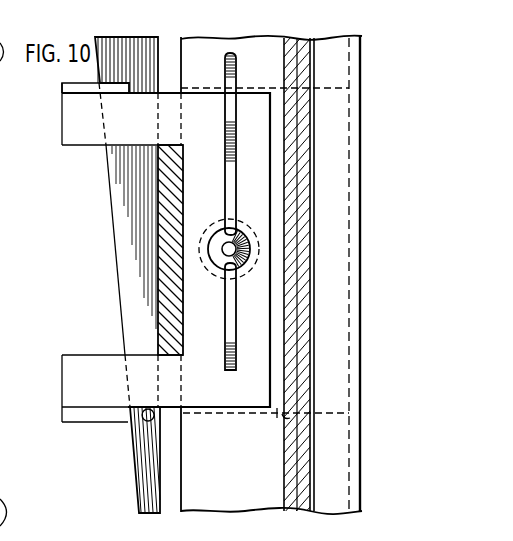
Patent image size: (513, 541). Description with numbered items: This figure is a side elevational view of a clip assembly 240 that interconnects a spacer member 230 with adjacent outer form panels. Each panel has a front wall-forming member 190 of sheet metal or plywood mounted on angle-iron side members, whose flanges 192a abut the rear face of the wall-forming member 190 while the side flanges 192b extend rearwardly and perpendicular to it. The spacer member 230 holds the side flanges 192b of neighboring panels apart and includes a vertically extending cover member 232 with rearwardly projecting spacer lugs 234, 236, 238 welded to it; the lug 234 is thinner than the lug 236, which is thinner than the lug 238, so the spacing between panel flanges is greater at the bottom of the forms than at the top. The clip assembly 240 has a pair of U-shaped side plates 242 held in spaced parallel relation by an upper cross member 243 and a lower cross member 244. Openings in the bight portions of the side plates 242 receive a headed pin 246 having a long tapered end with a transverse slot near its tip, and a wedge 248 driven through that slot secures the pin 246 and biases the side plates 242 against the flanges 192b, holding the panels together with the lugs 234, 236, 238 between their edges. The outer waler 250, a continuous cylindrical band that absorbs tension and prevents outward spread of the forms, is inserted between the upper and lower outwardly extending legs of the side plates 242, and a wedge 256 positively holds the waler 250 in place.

The wall-forming member 190 is at (300, 509).
The flange 192a is at (290, 510).
The side flange 192b is at (173, 468).
The spacer member 230 is at (365, 139).
The cover member 232 is at (358, 184).
The spacer lug 234 is at (287, 430).
The spacer lug 236 is at (360, 274).
The spacer lug 238 is at (364, 274).
The clip assembly 240 is at (87, 151).
The U-shaped side plate 242 is at (256, 309).
The upper cross member 243 is at (68, 88).
The lower cross member 244 is at (62, 416).
The headed pin 246 is at (218, 258).
The wedge 248 is at (236, 72).
The outer waler 250 is at (160, 218).
The wedge 256 is at (133, 40).